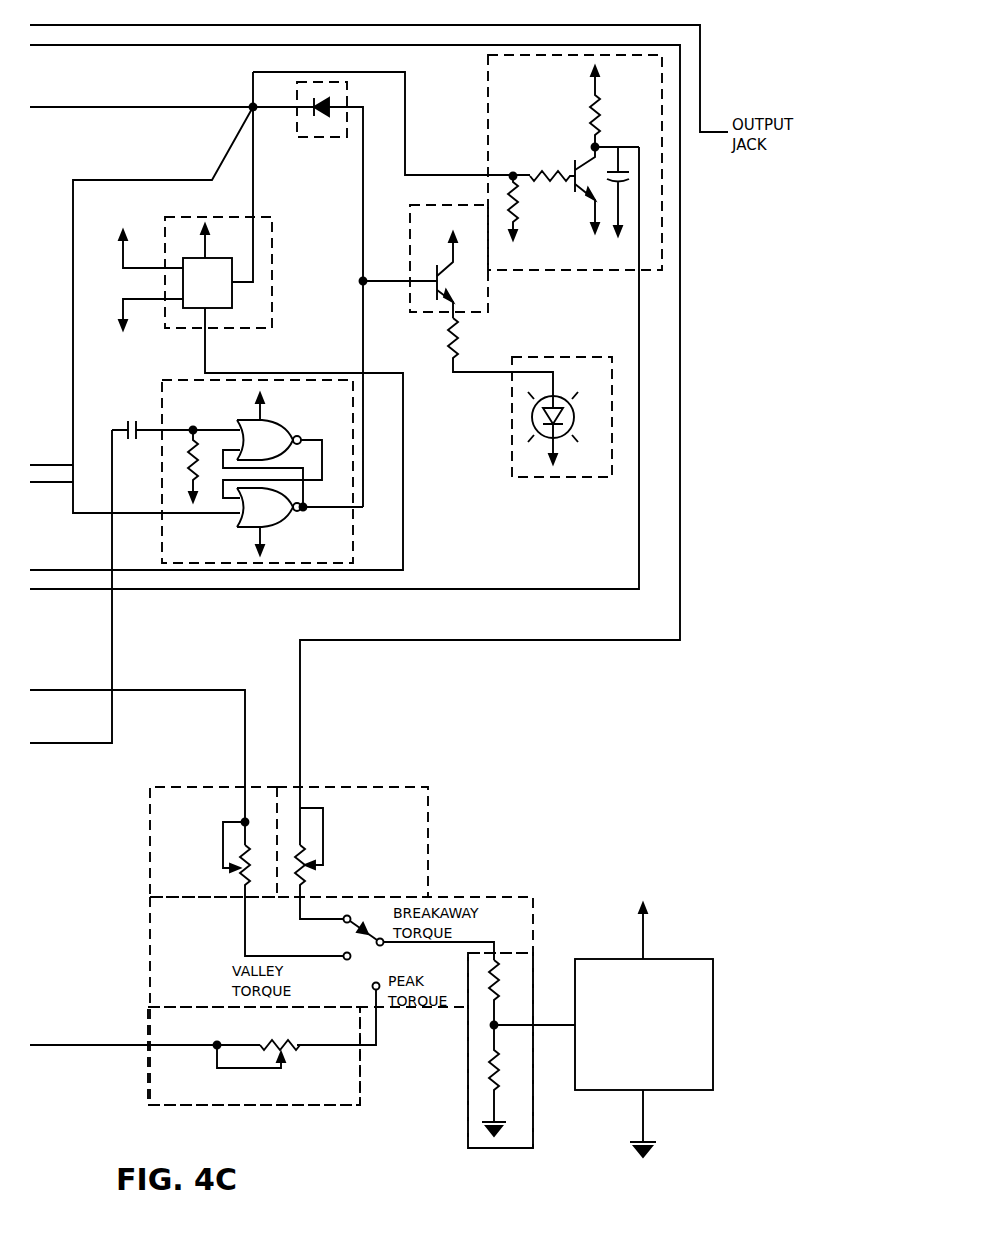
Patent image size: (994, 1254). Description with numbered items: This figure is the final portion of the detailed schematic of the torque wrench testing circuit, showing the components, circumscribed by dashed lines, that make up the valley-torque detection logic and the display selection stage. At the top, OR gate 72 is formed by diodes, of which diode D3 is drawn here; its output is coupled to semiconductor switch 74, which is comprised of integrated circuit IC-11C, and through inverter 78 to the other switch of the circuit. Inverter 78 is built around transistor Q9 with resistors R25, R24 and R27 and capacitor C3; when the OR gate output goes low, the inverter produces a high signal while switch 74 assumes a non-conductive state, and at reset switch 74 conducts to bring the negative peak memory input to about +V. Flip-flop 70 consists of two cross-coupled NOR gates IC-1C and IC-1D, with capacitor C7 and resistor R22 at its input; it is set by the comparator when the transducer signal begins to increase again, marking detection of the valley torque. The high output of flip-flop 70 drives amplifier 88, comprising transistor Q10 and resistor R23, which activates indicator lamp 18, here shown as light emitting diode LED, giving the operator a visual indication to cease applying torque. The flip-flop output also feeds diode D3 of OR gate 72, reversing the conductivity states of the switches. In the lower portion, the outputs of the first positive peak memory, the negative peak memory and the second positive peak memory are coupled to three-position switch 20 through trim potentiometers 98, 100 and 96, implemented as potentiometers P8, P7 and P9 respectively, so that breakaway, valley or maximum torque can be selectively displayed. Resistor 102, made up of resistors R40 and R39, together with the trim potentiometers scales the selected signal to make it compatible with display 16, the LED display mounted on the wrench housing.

The OR gate 72 is at (300, 138).
The diode D3 is at (320, 118).
The inverter 78 is at (488, 80).
The resistor R25 is at (530, 172).
The resistor R24 is at (515, 200).
The transistor Q9 is at (575, 167).
The resistor R27 is at (590, 110).
The capacitor C3 is at (618, 160).
The semiconductor switch 74 is at (262, 318).
The integrated circuit IC-11C is at (223, 292).
The amplifier 88 is at (475, 297).
The transistor Q10 is at (435, 278).
The resistor R23 is at (448, 340).
The indicator lamp 18 is at (525, 468).
The light emitting diode LED is at (530, 416).
The flip-flop 70 is at (335, 546).
The capacitor C7 is at (128, 422).
The resistor R22 is at (186, 462).
The NOR gate IC-1C is at (255, 430).
The NOR gate IC-1D is at (255, 515).
The trim potentiometer 100 is at (150, 869).
The trim potentiometer 98 is at (428, 866).
The trim potentiometer 96 is at (148, 1083).
The resistor 102 is at (472, 1103).
The potentiometer P7 is at (240, 869).
The potentiometer P8 is at (305, 882).
The multiposition display selection switch 20 is at (360, 938).
The resistor R40 is at (505, 975).
The resistor R39 is at (505, 1062).
The potentiometer P9 is at (278, 1040).
The LED display 16 is at (703, 985).